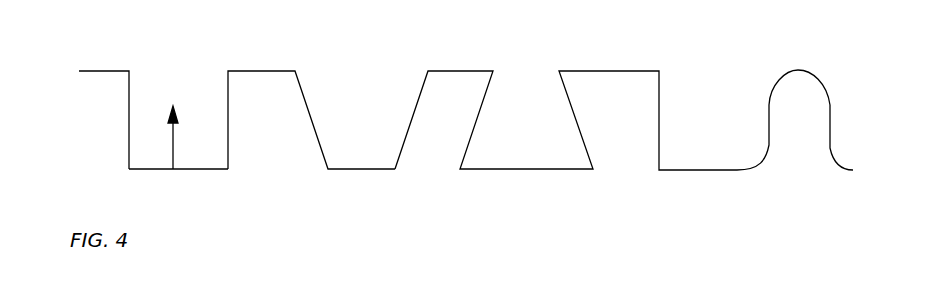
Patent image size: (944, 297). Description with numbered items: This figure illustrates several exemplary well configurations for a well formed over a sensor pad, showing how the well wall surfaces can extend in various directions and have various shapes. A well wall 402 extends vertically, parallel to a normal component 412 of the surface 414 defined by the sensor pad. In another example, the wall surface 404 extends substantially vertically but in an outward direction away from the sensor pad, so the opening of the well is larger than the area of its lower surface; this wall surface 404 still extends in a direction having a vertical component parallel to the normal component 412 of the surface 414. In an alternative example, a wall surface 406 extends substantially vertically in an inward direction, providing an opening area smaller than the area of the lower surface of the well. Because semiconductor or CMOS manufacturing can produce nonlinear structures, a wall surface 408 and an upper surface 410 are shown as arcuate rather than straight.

The well wall 402 is at (128, 105).
The wall surface 404 is at (319, 144).
The wall surface 406 is at (470, 141).
The wall surface 408 is at (769, 123).
The upper surface 410 is at (806, 70).
The normal component 412 is at (172, 152).
The surface 414 is at (205, 170).